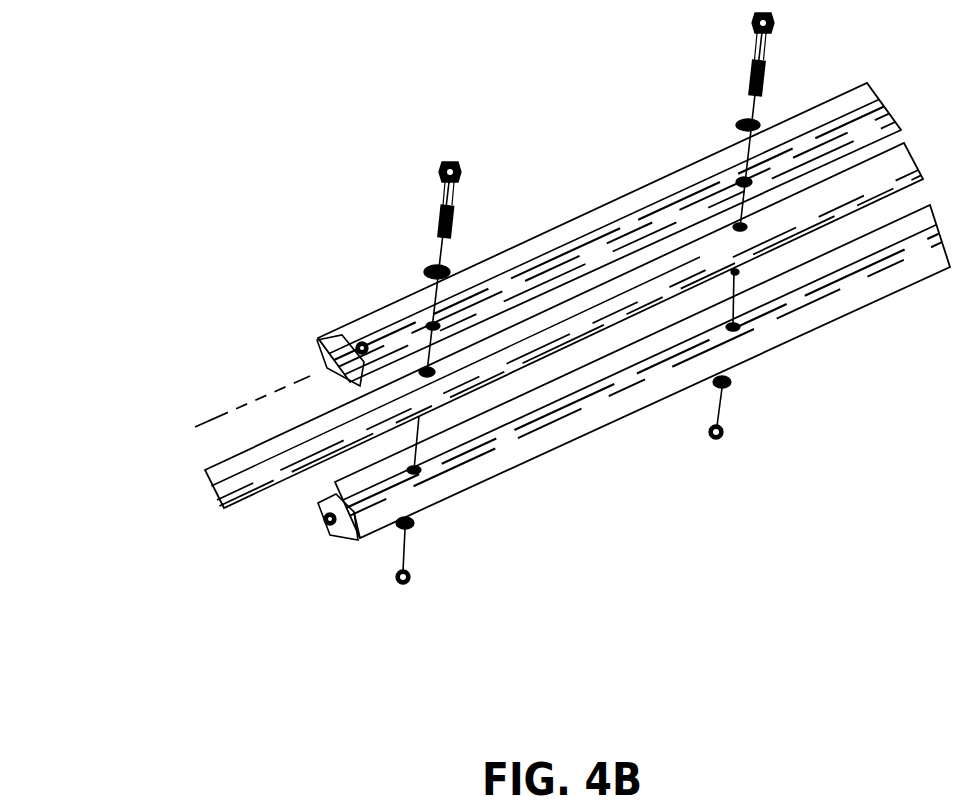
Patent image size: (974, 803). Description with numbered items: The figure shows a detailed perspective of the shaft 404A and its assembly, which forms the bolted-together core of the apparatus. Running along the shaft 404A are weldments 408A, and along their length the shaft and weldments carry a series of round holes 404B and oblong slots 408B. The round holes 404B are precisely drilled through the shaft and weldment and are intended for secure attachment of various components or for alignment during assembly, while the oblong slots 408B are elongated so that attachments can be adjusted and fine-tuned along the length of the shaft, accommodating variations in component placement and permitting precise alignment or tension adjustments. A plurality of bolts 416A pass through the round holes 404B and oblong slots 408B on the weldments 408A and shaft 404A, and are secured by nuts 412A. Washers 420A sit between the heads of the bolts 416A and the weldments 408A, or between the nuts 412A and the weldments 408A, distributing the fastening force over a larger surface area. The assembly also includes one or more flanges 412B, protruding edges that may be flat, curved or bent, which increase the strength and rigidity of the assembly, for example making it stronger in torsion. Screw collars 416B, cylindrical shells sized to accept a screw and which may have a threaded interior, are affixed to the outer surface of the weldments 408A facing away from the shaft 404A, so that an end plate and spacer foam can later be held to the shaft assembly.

The shaft 404A is at (204, 481).
The round holes 404B is at (620, 313).
The weldments 408A is at (357, 532).
The oblong slots 408B is at (646, 295).
The nuts 412A is at (730, 443).
The flanges 412B is at (325, 514).
The bolts 416A is at (437, 175).
The screw collars 416B is at (352, 350).
The washers 420A is at (751, 122).